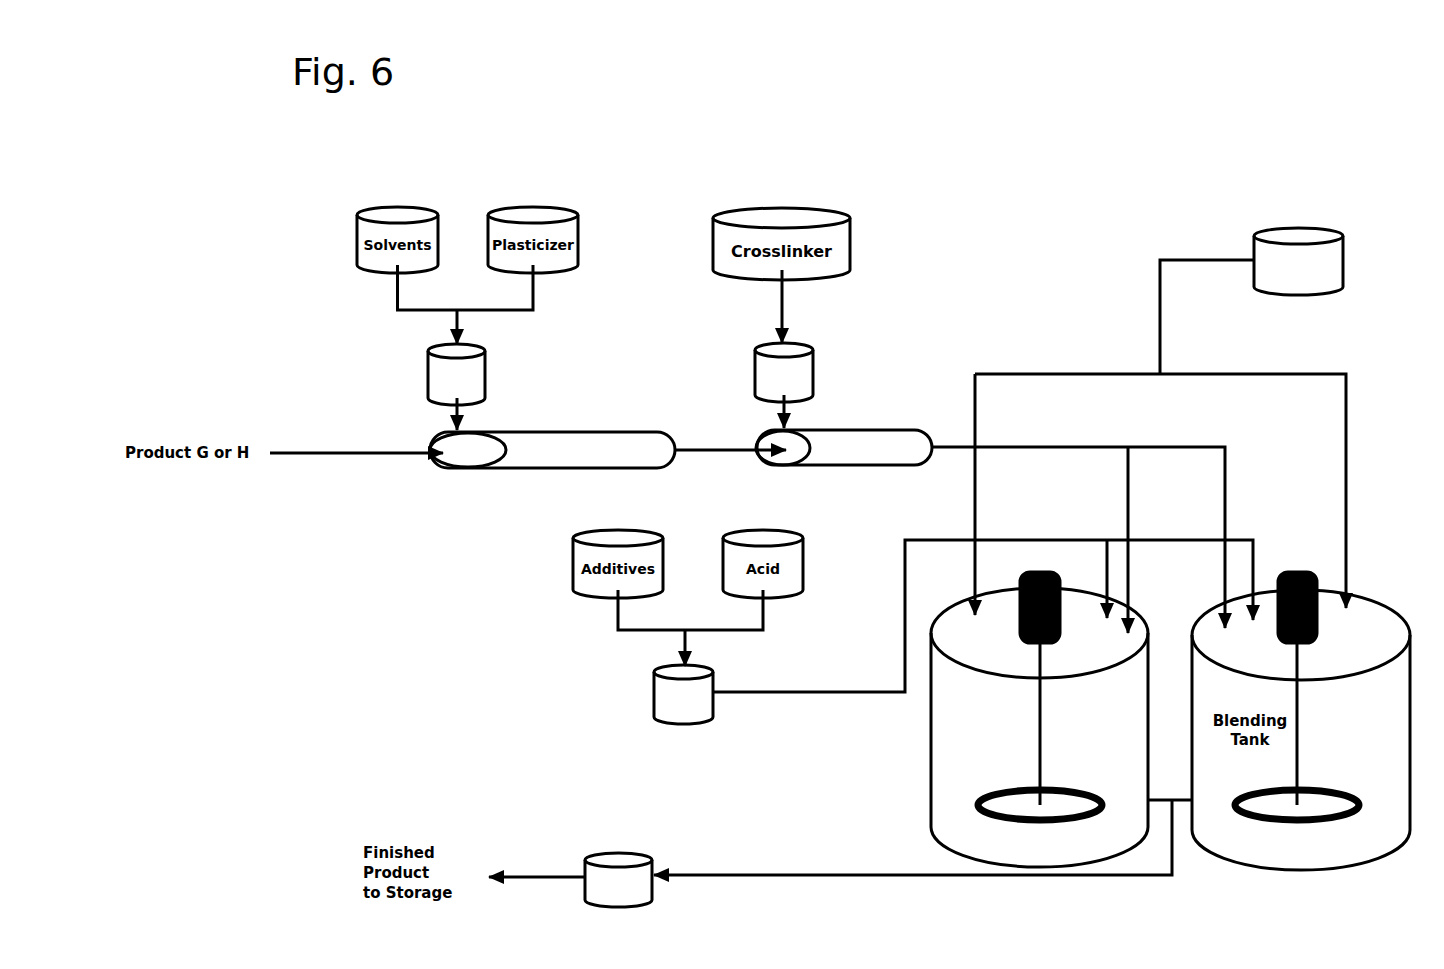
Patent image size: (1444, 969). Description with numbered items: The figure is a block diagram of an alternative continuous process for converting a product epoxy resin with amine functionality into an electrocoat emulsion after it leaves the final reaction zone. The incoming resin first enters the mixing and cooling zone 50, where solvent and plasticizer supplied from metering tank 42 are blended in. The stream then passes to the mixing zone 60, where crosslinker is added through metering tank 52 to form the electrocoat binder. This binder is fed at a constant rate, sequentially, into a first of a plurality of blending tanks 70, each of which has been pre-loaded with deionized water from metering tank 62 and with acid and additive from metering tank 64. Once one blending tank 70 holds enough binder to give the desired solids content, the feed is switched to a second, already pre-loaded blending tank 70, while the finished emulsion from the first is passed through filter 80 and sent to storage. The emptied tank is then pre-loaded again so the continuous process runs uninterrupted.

The metering tank 42 is at (485, 362).
The mixing and cooling zone 50 is at (508, 468).
The metering tank 52 is at (813, 362).
The mixing zone 60 is at (828, 466).
The metering tank 62 is at (1258, 228).
The metering tank 64 is at (654, 692).
The blending tank 70 is at (932, 766).
The filter 80 is at (592, 852).